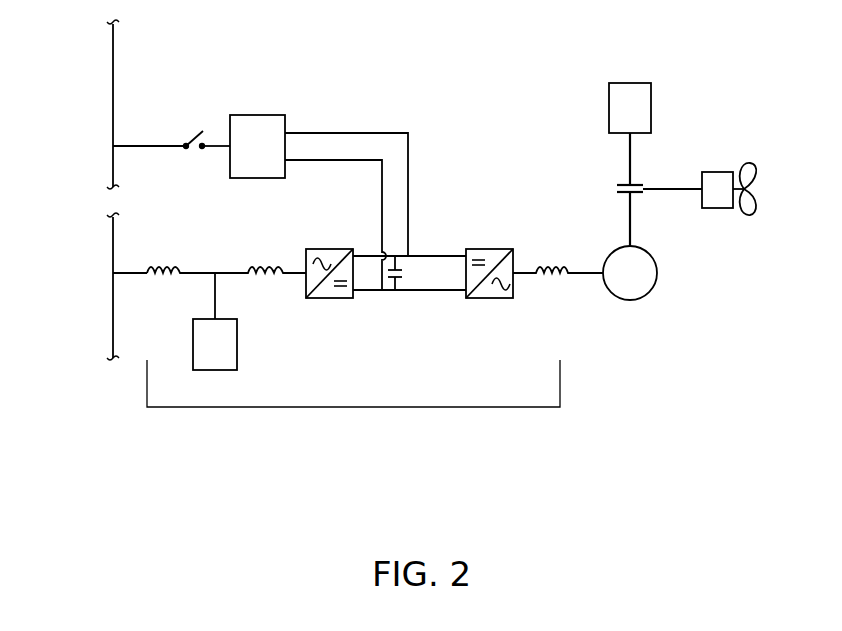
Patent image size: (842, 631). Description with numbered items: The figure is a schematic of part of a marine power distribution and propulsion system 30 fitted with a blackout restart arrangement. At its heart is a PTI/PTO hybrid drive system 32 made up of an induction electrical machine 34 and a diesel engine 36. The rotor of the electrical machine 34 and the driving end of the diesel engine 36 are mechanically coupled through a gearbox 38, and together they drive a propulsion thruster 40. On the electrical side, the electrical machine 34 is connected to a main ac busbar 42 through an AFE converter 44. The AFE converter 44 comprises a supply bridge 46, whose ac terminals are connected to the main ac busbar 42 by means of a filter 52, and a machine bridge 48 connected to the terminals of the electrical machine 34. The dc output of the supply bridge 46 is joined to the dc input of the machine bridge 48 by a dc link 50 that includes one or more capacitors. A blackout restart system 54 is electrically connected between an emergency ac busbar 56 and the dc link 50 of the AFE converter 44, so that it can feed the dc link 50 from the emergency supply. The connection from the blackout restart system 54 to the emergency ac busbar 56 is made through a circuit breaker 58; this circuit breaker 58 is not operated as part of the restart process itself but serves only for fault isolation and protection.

The marine power distribution and propulsion system 30 is at (507, 413).
The PTI/PTO hybrid drive system 32 is at (676, 270).
The induction electrical machine 34 is at (627, 302).
The diesel engine 36 is at (627, 82).
The gearbox 38 is at (637, 182).
The propulsion thruster 40 is at (716, 171).
The main ac busbar 42 is at (112, 338).
The AFE converter 44 is at (351, 408).
The supply bridge 46 is at (335, 299).
The machine bridge 48 is at (484, 248).
The dc link 50 is at (442, 255).
The filter 52 is at (237, 343).
The blackout restart system 54 is at (319, 202).
The emergency ac busbar 56 is at (113, 52).
The circuit breaker 58 is at (191, 120).